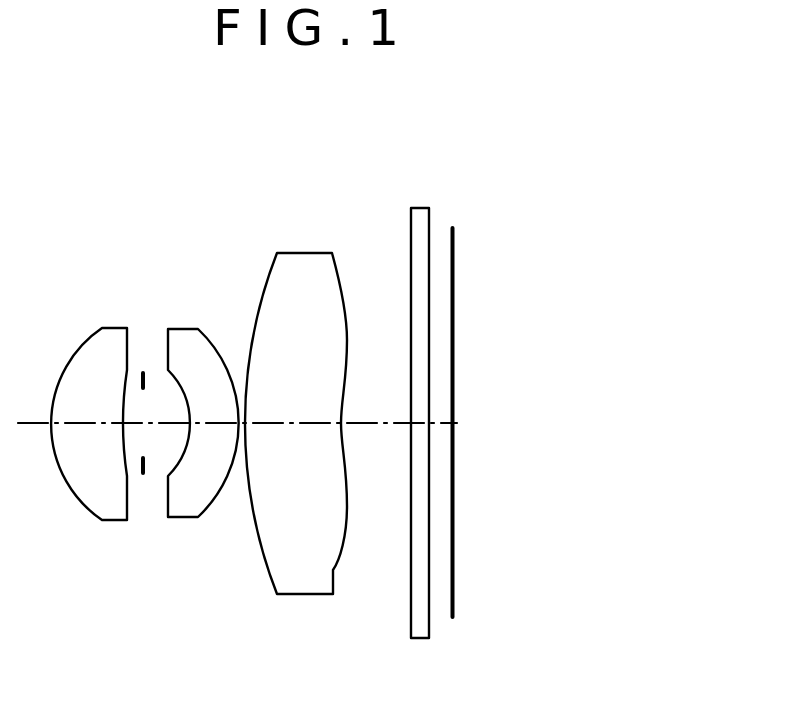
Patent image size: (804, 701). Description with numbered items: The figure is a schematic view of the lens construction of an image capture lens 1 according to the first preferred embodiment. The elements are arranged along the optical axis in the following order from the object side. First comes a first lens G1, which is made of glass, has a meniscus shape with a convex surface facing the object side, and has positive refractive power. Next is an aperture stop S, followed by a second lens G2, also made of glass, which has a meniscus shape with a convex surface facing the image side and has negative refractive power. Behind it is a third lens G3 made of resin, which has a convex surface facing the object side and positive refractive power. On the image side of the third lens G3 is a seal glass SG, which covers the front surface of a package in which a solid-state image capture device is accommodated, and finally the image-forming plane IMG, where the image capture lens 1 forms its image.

The image capture lens 1 is at (132, 170).
The first lens G1 is at (116, 328).
The second lens G2 is at (183, 330).
The third lens G3 is at (307, 253).
The aperture stop S is at (146, 470).
The seal glass SG is at (422, 208).
The image-forming plane IMG is at (451, 236).